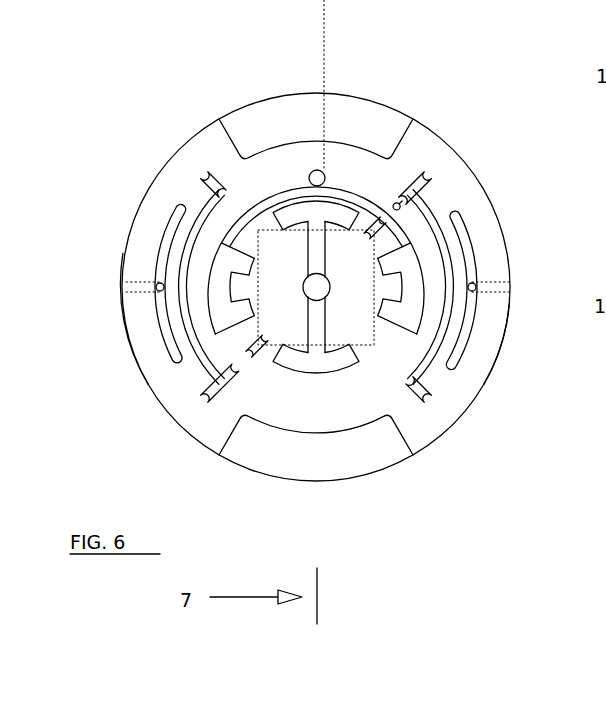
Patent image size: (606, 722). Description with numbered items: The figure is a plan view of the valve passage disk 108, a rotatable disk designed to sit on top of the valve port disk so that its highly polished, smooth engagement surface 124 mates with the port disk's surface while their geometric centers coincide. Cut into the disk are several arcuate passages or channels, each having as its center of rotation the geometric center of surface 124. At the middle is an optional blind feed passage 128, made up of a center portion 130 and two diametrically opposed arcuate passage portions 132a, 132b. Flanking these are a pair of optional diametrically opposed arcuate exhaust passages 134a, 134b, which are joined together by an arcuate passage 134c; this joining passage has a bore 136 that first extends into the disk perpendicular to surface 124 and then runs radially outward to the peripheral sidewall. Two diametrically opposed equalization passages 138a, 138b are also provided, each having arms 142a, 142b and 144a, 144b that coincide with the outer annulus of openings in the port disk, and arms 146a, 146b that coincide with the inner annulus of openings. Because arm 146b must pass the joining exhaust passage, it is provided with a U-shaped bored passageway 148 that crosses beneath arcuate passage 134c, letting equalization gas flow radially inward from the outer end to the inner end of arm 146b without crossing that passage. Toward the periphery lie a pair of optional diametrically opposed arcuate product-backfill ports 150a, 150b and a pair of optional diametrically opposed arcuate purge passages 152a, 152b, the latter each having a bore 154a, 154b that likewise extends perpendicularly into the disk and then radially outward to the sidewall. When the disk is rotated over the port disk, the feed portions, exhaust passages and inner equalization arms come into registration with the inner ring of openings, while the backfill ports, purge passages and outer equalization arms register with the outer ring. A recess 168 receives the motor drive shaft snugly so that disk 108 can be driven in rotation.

The valve passage disk 108 is at (511, 262).
The engagement surface 124 is at (425, 428).
The blind feed passage 128 is at (325, 330).
The center portion 130 is at (320, 289).
The arcuate passage portion 132a is at (295, 212).
The arcuate passage portion 132b is at (310, 363).
The arcuate exhaust passage 134a is at (242, 265).
The arcuate exhaust passage 134b is at (396, 260).
The arcuate passage 134c is at (250, 203).
The bore 136 is at (318, 178).
The equalization passage 138a is at (180, 210).
The equalization passage 138b is at (442, 374).
The arm 142a is at (207, 183).
The arm 142b is at (430, 398).
The arm 144a is at (203, 397).
The arm 144b is at (427, 176).
The arm 146a is at (248, 348).
The arm 146b is at (372, 237).
The U-shaped bored passageway 148 is at (398, 207).
The arcuate product-backfill port 150a is at (243, 128).
The arcuate product-backfill port 150b is at (313, 458).
The arcuate purge passage 152a is at (153, 258).
The arcuate purge passage 152b is at (473, 243).
The bore 154a is at (157, 286).
The bore 154b is at (476, 291).
The recess 168 is at (195, 435).